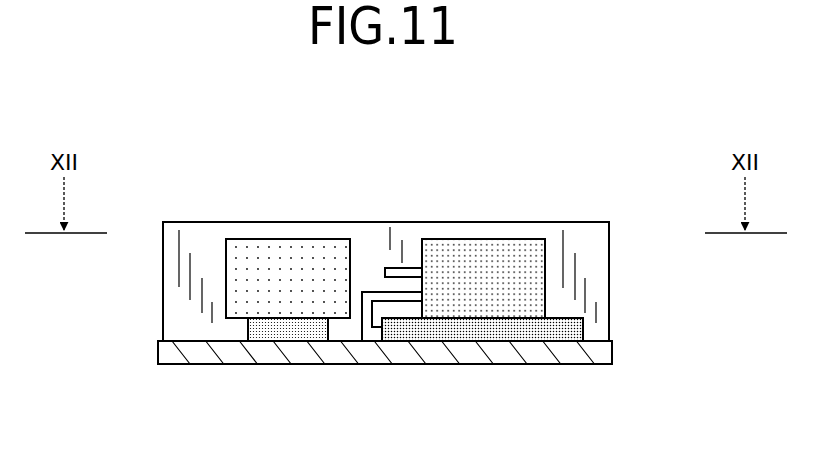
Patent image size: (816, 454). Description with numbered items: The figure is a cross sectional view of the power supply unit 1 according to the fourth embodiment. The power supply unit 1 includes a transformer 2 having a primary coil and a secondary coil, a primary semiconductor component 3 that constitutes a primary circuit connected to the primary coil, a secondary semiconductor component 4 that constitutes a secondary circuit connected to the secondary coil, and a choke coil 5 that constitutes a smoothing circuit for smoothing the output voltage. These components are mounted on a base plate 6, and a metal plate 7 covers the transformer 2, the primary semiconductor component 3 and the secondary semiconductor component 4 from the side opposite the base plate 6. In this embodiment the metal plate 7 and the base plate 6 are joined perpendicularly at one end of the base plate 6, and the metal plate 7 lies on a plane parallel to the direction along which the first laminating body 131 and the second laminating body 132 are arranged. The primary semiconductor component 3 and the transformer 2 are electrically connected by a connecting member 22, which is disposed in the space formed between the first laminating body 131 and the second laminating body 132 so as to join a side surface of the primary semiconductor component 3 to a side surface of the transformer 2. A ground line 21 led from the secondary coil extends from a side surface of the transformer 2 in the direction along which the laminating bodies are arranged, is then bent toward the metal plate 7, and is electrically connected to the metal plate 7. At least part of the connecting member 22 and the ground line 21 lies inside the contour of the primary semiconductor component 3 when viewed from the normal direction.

The power supply unit 1 is at (587, 187).
The transformer 2 is at (482, 262).
The primary semiconductor component 3 is at (490, 328).
The secondary semiconductor component 4 is at (290, 328).
The choke coil 5 is at (298, 262).
The base plate 6 is at (398, 352).
The metal plate 7 is at (598, 260).
The ground line 21 is at (388, 271).
The connecting member 22 is at (366, 309).
The first laminating body 131 is at (457, 238).
The second laminating body 132 is at (237, 237).